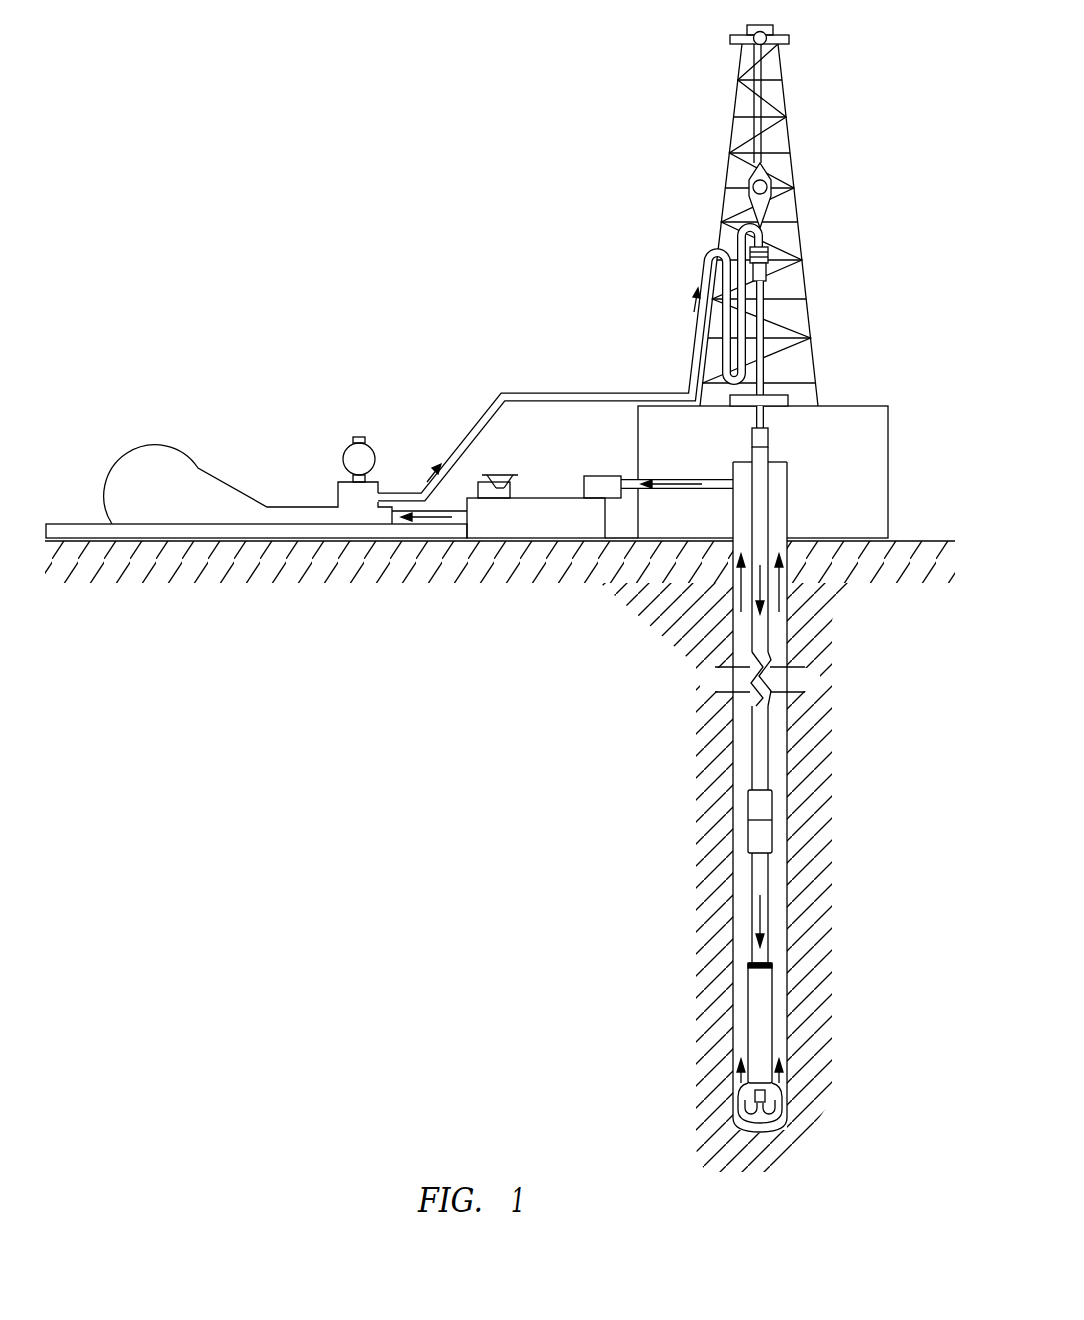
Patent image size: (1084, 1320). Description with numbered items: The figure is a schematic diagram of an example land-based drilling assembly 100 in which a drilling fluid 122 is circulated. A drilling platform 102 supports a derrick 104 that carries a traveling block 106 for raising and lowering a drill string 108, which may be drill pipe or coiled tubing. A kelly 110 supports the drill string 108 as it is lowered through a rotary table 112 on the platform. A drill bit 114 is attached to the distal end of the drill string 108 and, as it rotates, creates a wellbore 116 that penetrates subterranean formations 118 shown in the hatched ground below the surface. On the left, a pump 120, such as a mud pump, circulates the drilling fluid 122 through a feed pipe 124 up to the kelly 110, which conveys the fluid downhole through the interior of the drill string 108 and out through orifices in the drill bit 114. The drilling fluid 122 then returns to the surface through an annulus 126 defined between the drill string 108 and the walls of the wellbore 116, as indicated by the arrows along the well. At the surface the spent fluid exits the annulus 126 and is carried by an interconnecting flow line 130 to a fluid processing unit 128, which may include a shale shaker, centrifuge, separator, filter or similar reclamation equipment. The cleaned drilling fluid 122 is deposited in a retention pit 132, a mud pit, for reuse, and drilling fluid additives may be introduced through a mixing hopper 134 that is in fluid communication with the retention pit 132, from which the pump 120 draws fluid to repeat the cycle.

The drilling assembly 100 is at (465, 108).
The drilling platform 102 is at (889, 412).
The derrick 104 is at (792, 128).
The traveling block 106 is at (773, 182).
The drill string 108 is at (762, 648).
The kelly 110 is at (765, 312).
The rotary table 112 is at (790, 399).
The drill bit 114 is at (795, 1100).
The wellbore 116 is at (792, 745).
The subterranean formations 118 is at (614, 782).
The pump 120 is at (170, 501).
The drilling fluid 122 is at (398, 492).
The feed pipe 124 is at (521, 392).
The annulus 126 is at (788, 918).
The fluid processing unit 128 is at (600, 476).
The flow line 130 is at (714, 490).
The retention pit 132 is at (581, 540).
The mixing hopper 134 is at (488, 498).